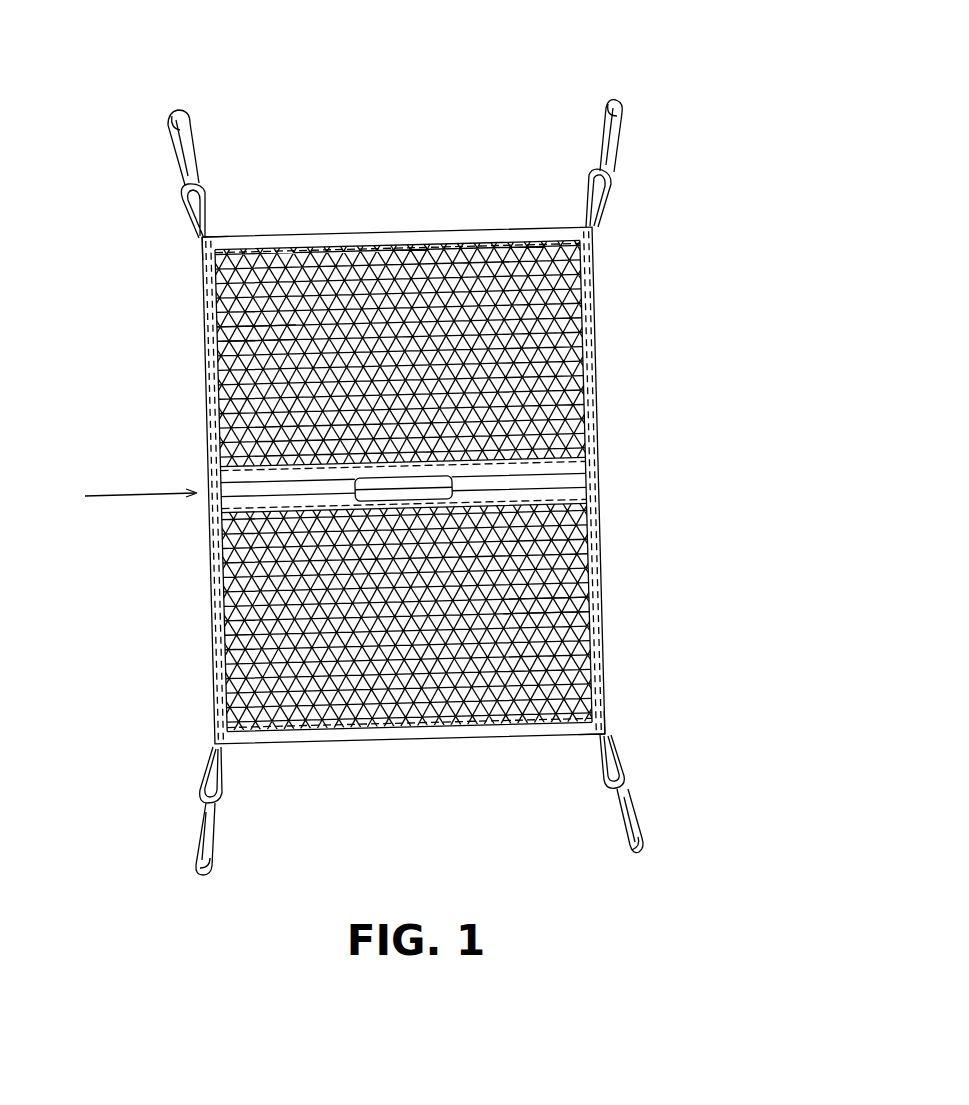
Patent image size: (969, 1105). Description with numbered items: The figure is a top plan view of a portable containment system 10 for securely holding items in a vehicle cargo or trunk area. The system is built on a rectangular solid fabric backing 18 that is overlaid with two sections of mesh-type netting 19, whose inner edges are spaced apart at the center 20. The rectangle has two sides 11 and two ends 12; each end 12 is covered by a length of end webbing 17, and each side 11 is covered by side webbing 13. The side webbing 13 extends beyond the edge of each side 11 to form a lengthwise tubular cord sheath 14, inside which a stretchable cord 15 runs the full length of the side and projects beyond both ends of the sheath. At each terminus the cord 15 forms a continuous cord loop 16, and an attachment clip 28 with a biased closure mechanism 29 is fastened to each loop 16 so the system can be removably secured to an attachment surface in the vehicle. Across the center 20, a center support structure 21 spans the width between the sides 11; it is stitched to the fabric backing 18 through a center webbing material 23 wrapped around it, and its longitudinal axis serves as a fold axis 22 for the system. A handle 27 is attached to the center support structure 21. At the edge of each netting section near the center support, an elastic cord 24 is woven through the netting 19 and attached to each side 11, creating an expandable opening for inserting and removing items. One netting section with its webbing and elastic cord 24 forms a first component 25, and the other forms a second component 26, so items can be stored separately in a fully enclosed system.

The portable containment system 10 is at (720, 148).
The side 11 is at (207, 631).
The end 12 is at (393, 226).
The side webbing 13 is at (213, 681).
The cord sheath 14 is at (203, 271).
The stretchable cord 15 is at (198, 233).
The cord loop 16 is at (599, 185).
The end webbing 17 is at (292, 244).
The fabric backing 18 is at (317, 713).
The netting 19 is at (465, 281).
The center 20 is at (550, 469).
The center support structure 21 is at (305, 491).
The fold axis 22 is at (124, 497).
The center webbing material 23 is at (318, 498).
The elastic cord 24 is at (290, 491).
The first component 25 is at (245, 331).
The second component 26 is at (565, 611).
The handle 27 is at (455, 486).
The attachment clip 28 is at (602, 100).
The biased closure mechanism 29 is at (610, 131).